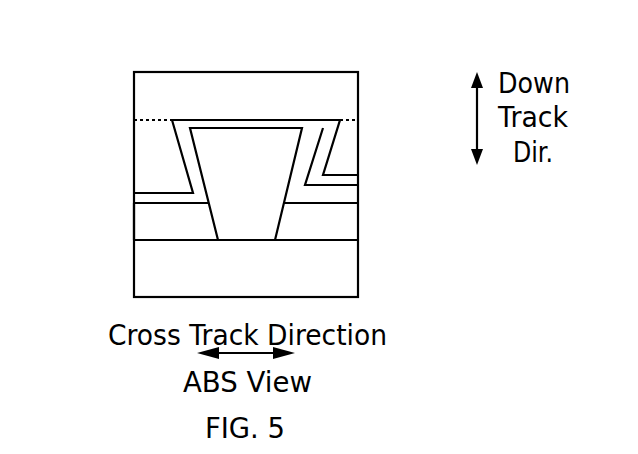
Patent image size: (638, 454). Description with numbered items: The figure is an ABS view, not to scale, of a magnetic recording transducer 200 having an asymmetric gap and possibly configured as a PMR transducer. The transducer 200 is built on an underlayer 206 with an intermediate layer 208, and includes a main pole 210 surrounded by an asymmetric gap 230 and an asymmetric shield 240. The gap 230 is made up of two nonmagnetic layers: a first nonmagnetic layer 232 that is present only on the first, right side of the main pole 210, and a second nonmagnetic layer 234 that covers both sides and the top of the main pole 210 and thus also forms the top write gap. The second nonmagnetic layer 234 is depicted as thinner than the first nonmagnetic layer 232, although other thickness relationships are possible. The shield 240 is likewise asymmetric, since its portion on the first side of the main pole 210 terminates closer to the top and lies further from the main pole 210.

The transducer 200 is at (272, 47).
The shield 240 is at (246, 96).
The pole 210 is at (246, 184).
The underlayer 206 is at (246, 268).
The gap 230 is at (382, 184).
The first nonmagnetic layer 232 is at (358, 193).
The second nonmagnetic layer 234 is at (142, 192).
The intermediate layer 208 is at (101, 227).